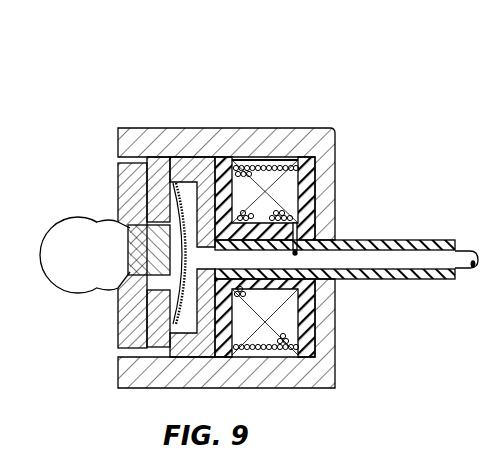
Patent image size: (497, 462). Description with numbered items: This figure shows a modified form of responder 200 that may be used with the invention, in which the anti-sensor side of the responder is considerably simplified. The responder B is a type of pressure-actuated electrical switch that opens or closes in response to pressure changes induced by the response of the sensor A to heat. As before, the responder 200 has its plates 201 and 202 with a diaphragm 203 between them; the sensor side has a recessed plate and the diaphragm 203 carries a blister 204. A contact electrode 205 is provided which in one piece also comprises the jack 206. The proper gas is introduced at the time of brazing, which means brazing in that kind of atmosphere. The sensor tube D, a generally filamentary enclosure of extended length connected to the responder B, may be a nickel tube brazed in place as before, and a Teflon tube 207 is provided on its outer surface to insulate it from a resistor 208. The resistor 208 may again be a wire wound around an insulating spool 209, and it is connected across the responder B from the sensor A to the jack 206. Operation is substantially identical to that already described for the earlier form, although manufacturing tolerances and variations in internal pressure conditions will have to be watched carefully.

The responder 200 is at (187, 146).
The plate 201 is at (208, 157).
The plate 202 is at (118, 170).
The diaphragm 203 is at (163, 165).
The blister 204 is at (177, 326).
The contact electrode 205 is at (118, 292).
The jack 206 is at (98, 221).
The Teflon tube 207 is at (350, 240).
The resistor 208 is at (278, 163).
The insulating spool 209 is at (316, 200).
The sensor A is at (475, 245).
The responder B is at (291, 116).
The sensor tube D is at (380, 266).